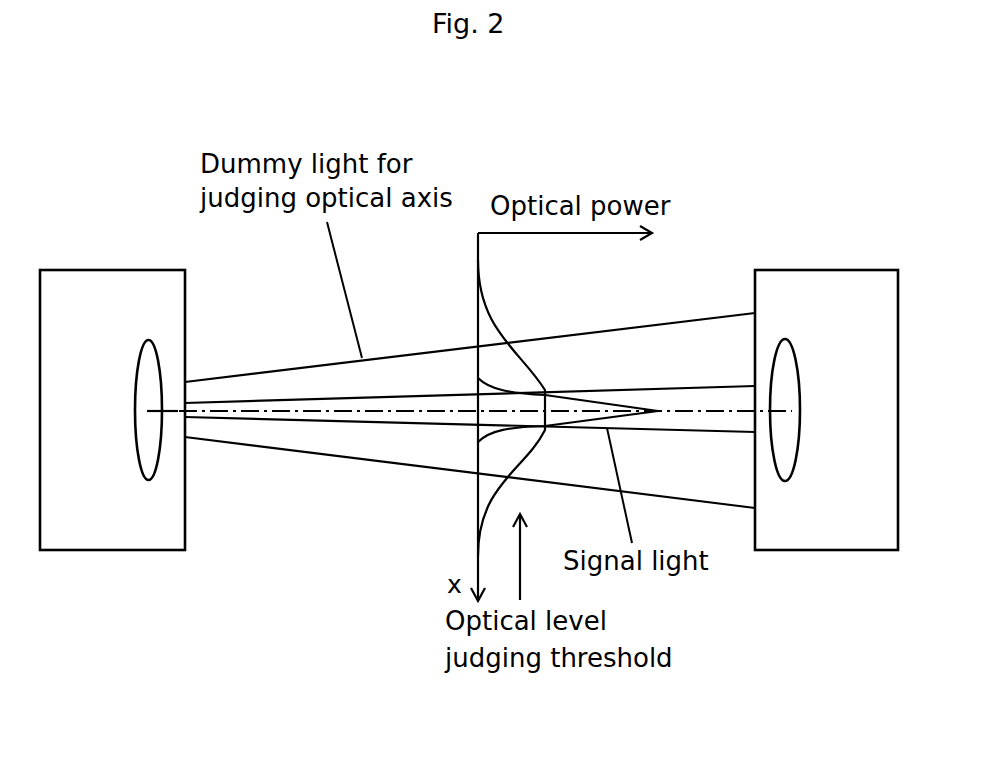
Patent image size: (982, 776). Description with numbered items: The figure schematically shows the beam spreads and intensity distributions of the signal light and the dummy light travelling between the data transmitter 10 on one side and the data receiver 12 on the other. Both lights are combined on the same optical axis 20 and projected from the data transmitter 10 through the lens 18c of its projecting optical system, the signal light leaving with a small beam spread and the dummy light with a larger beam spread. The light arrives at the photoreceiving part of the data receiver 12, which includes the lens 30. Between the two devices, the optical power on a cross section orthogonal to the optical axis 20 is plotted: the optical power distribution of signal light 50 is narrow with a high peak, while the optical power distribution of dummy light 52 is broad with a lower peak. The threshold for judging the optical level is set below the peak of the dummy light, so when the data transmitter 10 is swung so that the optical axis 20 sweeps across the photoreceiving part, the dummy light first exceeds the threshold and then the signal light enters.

The data transmitter 10 is at (127, 278).
The data receiver 12 is at (828, 277).
The lens 18c is at (150, 465).
The lens 30 is at (793, 467).
The optical axis 20 is at (378, 412).
The optical power distribution of signal light 50 is at (620, 398).
The optical power distribution of dummy light 52 is at (522, 360).